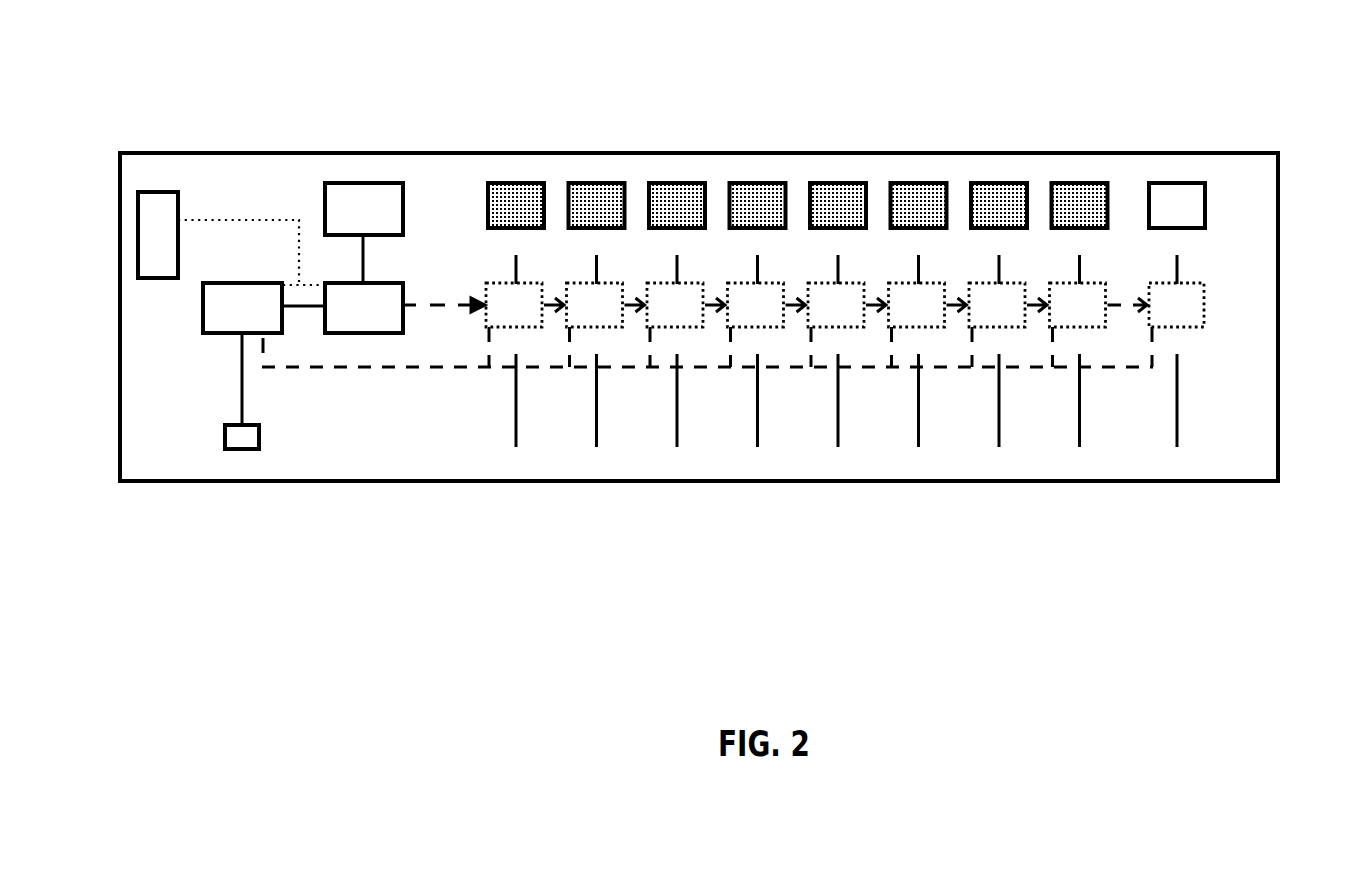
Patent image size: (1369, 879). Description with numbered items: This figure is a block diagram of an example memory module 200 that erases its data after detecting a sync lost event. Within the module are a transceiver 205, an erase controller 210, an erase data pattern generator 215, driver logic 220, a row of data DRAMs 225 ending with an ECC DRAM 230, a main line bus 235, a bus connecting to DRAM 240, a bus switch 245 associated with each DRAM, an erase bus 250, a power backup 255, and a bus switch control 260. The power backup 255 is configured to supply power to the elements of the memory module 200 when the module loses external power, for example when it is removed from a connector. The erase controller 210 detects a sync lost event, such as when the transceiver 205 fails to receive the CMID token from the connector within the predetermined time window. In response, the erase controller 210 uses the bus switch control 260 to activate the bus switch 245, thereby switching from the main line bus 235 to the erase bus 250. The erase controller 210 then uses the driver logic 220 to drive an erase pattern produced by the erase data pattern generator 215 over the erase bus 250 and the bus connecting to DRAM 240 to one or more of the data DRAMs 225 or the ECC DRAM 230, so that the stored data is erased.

The memory module 200 is at (188, 481).
The transceiver 205 is at (258, 440).
The erase controller 210 is at (223, 283).
The erase data pattern generator 215 is at (380, 183).
The driver logic 220 is at (370, 335).
The data DRAM 225 is at (530, 183).
The ECC DRAM 230 is at (1168, 183).
The main line bus 235 is at (998, 425).
The bus connecting to DRAM 240 is at (1180, 257).
The bus switch 245 is at (1204, 315).
The erase bus 250 is at (444, 306).
The power backup 255 is at (150, 192).
The bus switch control 260 is at (640, 367).